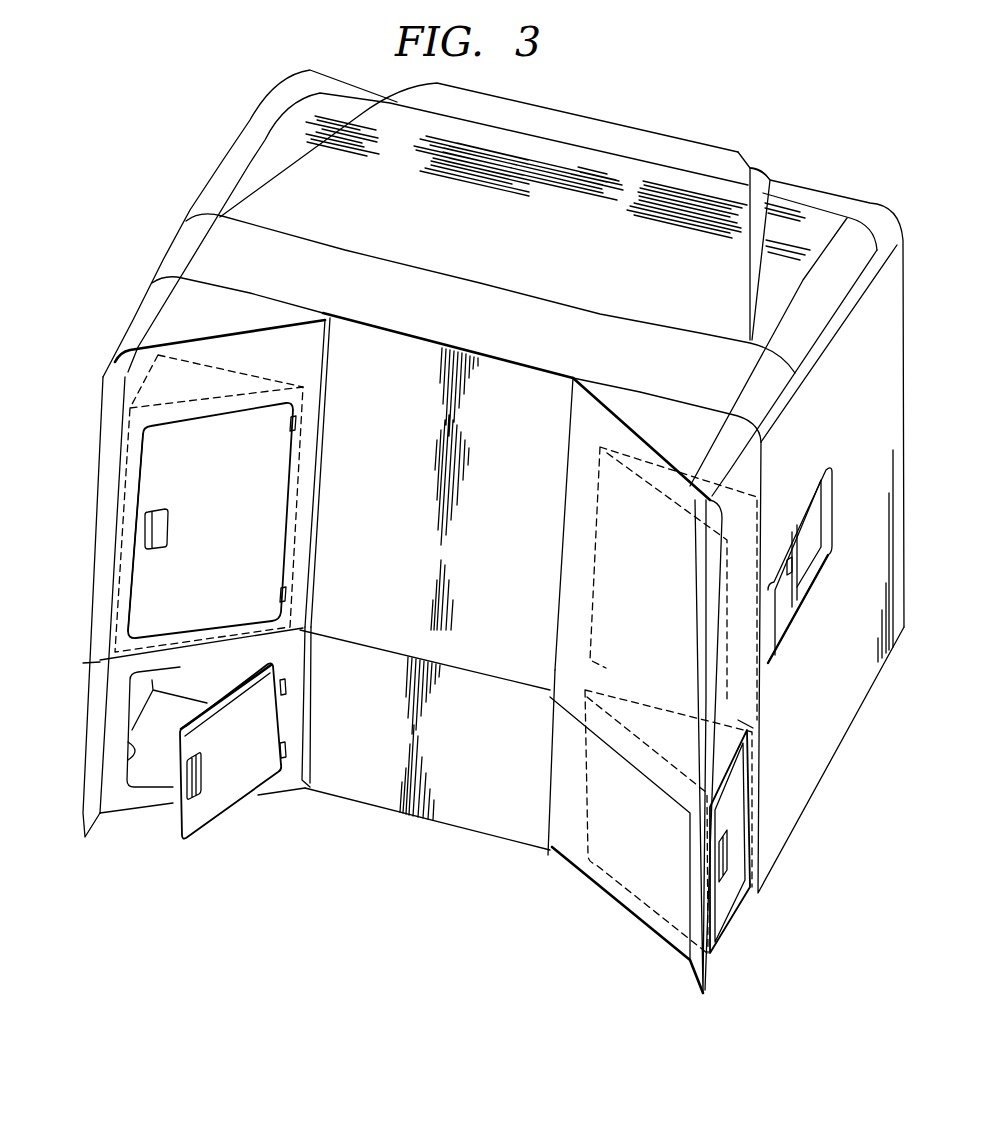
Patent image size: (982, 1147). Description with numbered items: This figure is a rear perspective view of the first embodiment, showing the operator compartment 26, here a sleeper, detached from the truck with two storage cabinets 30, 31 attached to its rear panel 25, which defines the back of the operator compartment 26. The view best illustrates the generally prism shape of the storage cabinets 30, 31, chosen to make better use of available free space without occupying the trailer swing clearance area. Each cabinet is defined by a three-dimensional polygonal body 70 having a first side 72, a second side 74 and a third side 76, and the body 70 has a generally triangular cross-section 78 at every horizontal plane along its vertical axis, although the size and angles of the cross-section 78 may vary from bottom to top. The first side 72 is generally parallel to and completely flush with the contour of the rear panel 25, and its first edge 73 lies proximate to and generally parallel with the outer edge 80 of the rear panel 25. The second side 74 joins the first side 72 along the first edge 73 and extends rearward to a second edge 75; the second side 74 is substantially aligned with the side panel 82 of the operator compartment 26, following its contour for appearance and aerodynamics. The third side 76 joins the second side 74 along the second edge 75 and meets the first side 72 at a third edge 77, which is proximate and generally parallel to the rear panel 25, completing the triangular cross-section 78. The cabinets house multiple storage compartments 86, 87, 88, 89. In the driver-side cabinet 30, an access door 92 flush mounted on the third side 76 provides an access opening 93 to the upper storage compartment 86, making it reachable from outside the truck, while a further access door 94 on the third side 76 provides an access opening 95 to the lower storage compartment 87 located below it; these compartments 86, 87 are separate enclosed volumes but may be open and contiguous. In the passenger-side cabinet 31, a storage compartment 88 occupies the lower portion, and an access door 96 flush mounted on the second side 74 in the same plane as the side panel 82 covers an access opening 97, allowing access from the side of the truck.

The rear panel 25 is at (406, 439).
The operator compartment 26 is at (521, 228).
The storage cabinet 30 is at (147, 822).
The storage cabinet 31 is at (624, 930).
The polygonal body 70 is at (95, 357).
The first side 72 is at (262, 298).
The first edge 73 is at (752, 714).
The second side 74 is at (133, 316).
The second edge 75 is at (103, 464).
The third side 76 is at (323, 367).
The third edge 77 is at (312, 532).
The generally triangular cross-section 78 is at (204, 326).
The outer edge 80 is at (760, 742).
The side panel 82 is at (851, 641).
The storage compartment 86 is at (147, 390).
The storage compartment 87 is at (160, 710).
The storage compartment 88 is at (606, 873).
The storage compartment 89 is at (603, 510).
The access door 92 is at (226, 481).
The access opening 93 is at (128, 562).
The access door 94 is at (250, 757).
The access opening 95 is at (128, 765).
The access door 96 is at (736, 895).
The access opening 97 is at (713, 862).